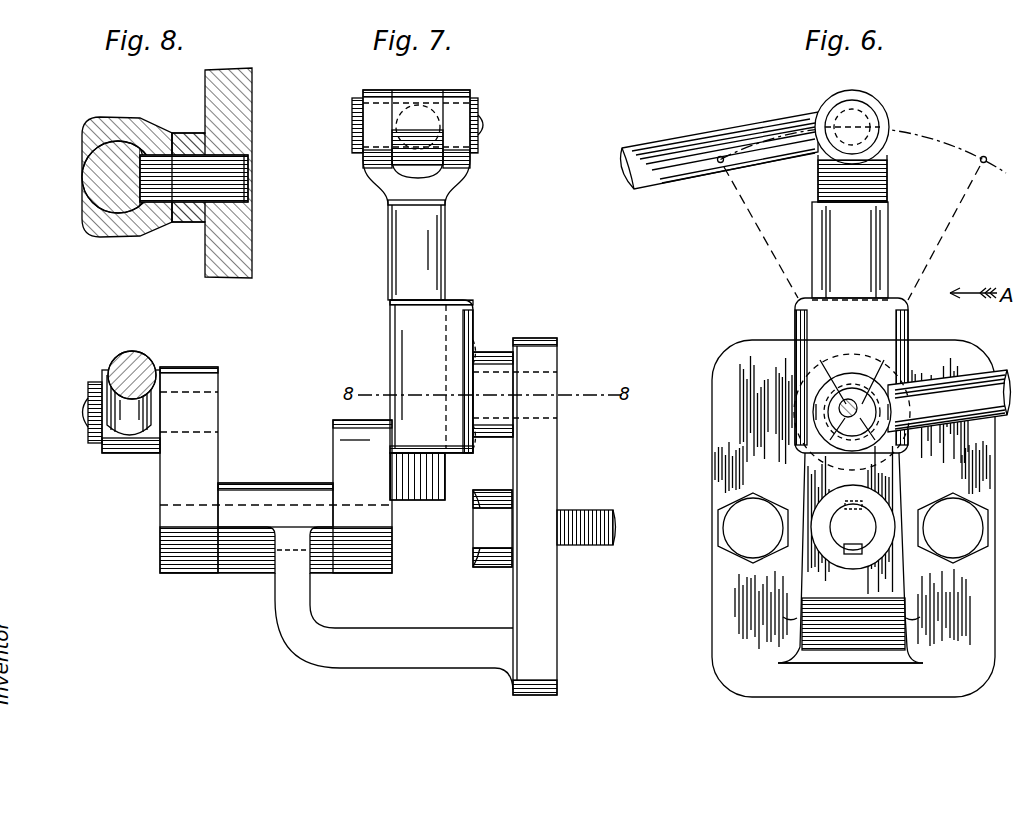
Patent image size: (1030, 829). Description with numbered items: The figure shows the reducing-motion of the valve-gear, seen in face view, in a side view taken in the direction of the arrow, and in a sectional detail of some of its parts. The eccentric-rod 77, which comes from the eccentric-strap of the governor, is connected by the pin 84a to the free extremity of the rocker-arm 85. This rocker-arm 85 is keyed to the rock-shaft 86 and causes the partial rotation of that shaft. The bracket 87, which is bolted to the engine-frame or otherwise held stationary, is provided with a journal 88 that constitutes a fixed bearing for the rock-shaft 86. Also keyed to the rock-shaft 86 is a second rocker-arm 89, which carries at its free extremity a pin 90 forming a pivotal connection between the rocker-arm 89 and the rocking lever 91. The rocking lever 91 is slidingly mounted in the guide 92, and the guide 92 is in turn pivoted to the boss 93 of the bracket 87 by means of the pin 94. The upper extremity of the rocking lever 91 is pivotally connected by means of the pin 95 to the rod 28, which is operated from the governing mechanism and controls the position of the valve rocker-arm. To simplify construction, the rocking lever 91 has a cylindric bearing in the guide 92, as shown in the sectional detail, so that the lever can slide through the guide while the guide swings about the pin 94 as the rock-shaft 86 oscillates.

In FIG. 6, the rod 28 is at (653, 152).
In FIG. 7, the eccentric-rod 77 is at (143, 357).
In FIG. 6, the eccentric-rod 77 is at (986, 385).
In FIG. 7, the pin 84a is at (84, 420).
In FIG. 6, the pin 84a is at (880, 410).
In FIG. 7, the rocker-arm 85 is at (162, 474).
In FIG. 6, the rocker-arm 85 is at (893, 493).
In FIG. 7, the rock-shaft 86 is at (165, 530).
In FIG. 6, the rock-shaft 86 is at (853, 527).
In FIG. 8, the bracket 87 is at (240, 246).
In FIG. 7, the bracket 87 is at (398, 655).
In FIG. 6, the bracket 87 is at (853, 518).
In FIG. 7, the journal 88 is at (270, 483).
In FIG. 7, the rocker-arm 89 is at (333, 436).
In FIG. 6, the rocker-arm 89 is at (808, 470).
In FIG. 7, the pin 90 is at (425, 468).
In FIG. 6, the pin 90 is at (862, 470).
In FIG. 8, the rocking lever 91 is at (88, 184).
In FIG. 7, the rocking lever 91 is at (446, 244).
In FIG. 6, the rocking lever 91 is at (836, 247).
In FIG. 8, the guide 92 is at (124, 118).
In FIG. 7, the guide 92 is at (474, 318).
In FIG. 6, the guide 92 is at (795, 318).
In FIG. 8, the boss 93 is at (193, 133).
In FIG. 7, the boss 93 is at (496, 351).
In FIG. 8, the pin 94 is at (240, 175).
In FIG. 7, the pin 94 is at (545, 386).
In FIG. 6, the pin 94 is at (878, 372).
In FIG. 7, the pin 95 is at (355, 113).
In FIG. 6, the pin 95 is at (860, 121).